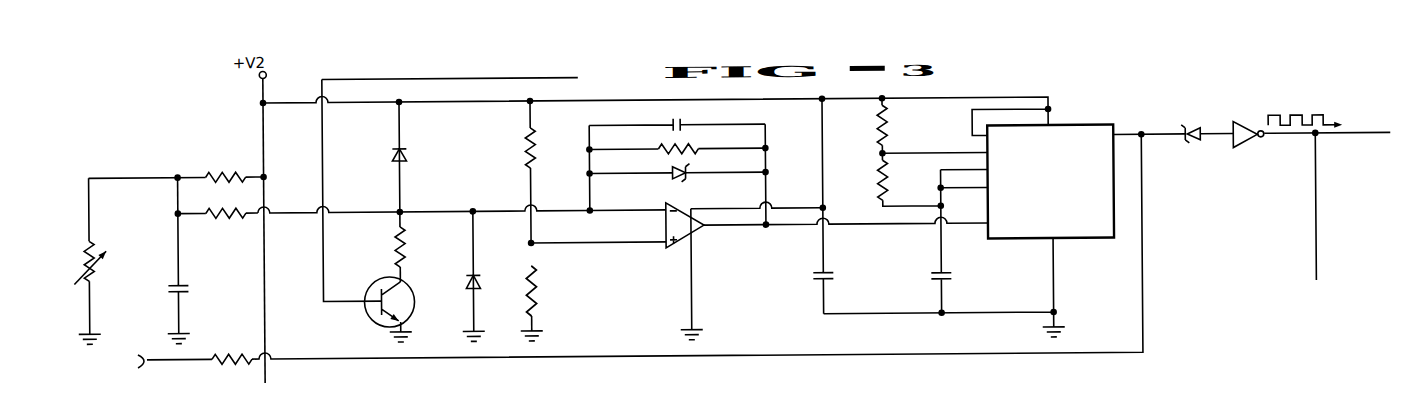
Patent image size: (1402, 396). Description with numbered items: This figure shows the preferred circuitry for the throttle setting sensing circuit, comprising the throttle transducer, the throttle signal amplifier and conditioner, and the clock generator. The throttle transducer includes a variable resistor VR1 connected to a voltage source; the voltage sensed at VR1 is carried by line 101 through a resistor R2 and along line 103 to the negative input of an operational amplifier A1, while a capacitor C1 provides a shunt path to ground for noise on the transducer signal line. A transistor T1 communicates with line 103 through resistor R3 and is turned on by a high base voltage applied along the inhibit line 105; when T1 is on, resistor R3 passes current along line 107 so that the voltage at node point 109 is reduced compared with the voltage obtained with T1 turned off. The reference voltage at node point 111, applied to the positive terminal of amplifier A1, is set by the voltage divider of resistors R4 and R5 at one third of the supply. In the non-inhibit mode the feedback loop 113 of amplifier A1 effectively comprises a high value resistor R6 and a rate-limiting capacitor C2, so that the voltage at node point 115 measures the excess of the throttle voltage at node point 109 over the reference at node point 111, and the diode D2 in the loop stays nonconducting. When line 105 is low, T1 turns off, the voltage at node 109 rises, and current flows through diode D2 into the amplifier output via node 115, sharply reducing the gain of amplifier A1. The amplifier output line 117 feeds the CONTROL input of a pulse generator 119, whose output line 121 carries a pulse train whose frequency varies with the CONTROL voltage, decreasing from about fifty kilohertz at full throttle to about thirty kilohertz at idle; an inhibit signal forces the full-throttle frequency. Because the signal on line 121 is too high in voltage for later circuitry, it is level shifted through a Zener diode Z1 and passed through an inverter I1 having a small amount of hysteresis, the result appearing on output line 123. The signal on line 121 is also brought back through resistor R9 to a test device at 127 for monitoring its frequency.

The line 101 is at (177, 197).
The line 103 is at (289, 214).
The inhibit line 105 is at (433, 80).
The line 107 is at (404, 270).
The node point 109 is at (590, 215).
The node point 111 is at (533, 247).
The feedback loop 113 is at (698, 163).
The node point 115 is at (767, 231).
The output line 117 is at (870, 230).
The pulse generator 119 is at (1082, 246).
The output line 121 is at (1142, 139).
The output line 123 is at (1379, 143).
The test device 127 is at (610, 264).
The variable resistor VR1 is at (101, 270).
The capacitor C1 is at (188, 292).
The resistor R2 is at (222, 217).
The resistor R3 is at (406, 241).
The resistor R4 is at (524, 161).
The resistor R5 is at (538, 292).
The high value resistor R6 is at (698, 150).
The resistor R9 is at (229, 357).
The rate-limiting capacitor C2 is at (683, 123).
The diode D2 is at (683, 181).
The transistor T1 is at (368, 320).
The operational amplifier A1 is at (705, 233).
The Zener diode Z1 is at (1198, 149).
The inverter I1 is at (1243, 157).